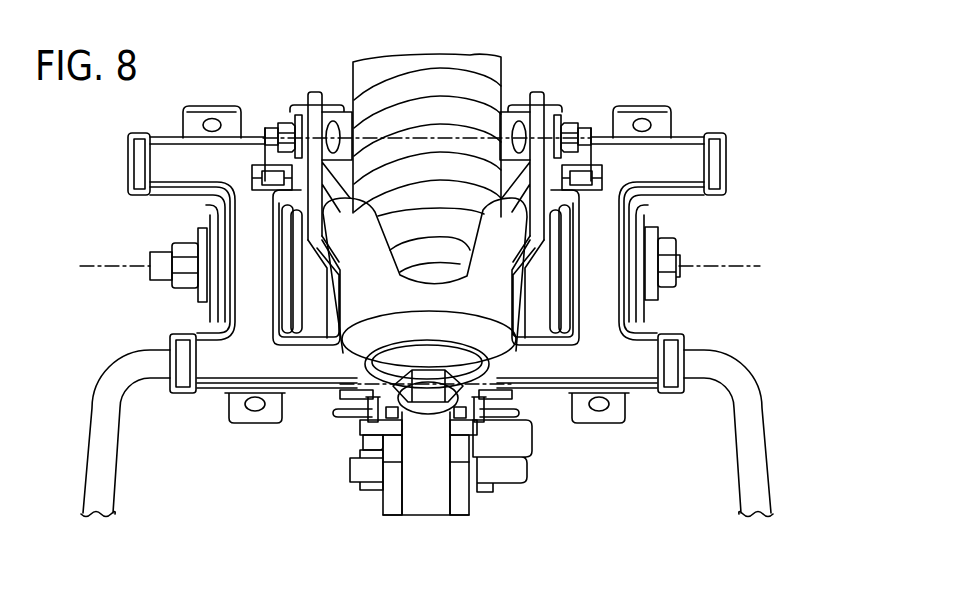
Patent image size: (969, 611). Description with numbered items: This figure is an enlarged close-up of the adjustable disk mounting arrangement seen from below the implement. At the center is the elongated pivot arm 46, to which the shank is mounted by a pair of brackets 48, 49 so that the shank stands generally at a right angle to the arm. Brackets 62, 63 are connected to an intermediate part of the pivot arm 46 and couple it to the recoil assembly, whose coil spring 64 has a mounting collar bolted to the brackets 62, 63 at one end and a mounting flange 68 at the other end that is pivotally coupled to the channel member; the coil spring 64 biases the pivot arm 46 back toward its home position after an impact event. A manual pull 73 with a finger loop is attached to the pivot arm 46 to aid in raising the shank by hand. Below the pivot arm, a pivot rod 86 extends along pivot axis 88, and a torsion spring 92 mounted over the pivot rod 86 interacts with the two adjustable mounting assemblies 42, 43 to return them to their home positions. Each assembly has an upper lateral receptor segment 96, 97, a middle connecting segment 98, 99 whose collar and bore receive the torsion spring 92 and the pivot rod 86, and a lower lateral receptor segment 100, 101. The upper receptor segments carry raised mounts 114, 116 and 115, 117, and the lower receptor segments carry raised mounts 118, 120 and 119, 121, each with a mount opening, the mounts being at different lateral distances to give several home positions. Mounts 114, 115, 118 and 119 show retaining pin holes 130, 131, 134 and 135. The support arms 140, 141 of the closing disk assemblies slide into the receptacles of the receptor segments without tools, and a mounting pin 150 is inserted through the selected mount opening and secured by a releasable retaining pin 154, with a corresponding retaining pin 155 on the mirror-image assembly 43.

The adjustable mounting assembly 42 is at (129, 131).
The adjustable mounting assembly 43 is at (728, 131).
The pivot arm 46 is at (430, 496).
The bracket 48 is at (393, 502).
The bracket 49 is at (470, 502).
The bracket 62 is at (312, 100).
The bracket 63 is at (546, 100).
The coil spring 64 is at (490, 100).
The mounting flange 68 is at (498, 298).
The manual pull 73 is at (505, 470).
The pivot rod 86 is at (165, 272).
The pivot axis 88 is at (96, 270).
The torsion spring 92 is at (553, 278).
The upper lateral receptor segment 96 is at (173, 172).
The upper lateral receptor segment 97 is at (683, 170).
The middle connecting segment 98 is at (255, 283).
The middle connecting segment 99 is at (600, 283).
The lower lateral receptor segment 100 is at (210, 367).
The lower lateral receptor segment 101 is at (643, 367).
The raised mount 114 is at (198, 110).
The raised mount 115 is at (655, 106).
The raised mount 116 is at (335, 108).
The raised mount 117 is at (582, 100).
The raised mount 118 is at (238, 413).
The raised mount 119 is at (617, 413).
The raised mount 120 is at (352, 400).
The raised mount 121 is at (500, 400).
The retaining pin hole 130 is at (214, 118).
The retaining pin hole 131 is at (645, 116).
The retaining pin hole 134 is at (255, 411).
The retaining pin hole 135 is at (600, 412).
The support arm 140 is at (91, 478).
The support arm 141 is at (765, 478).
The mounting pin 150 is at (358, 468).
The retaining pin 154 is at (372, 410).
The retaining pin 155 is at (502, 408).